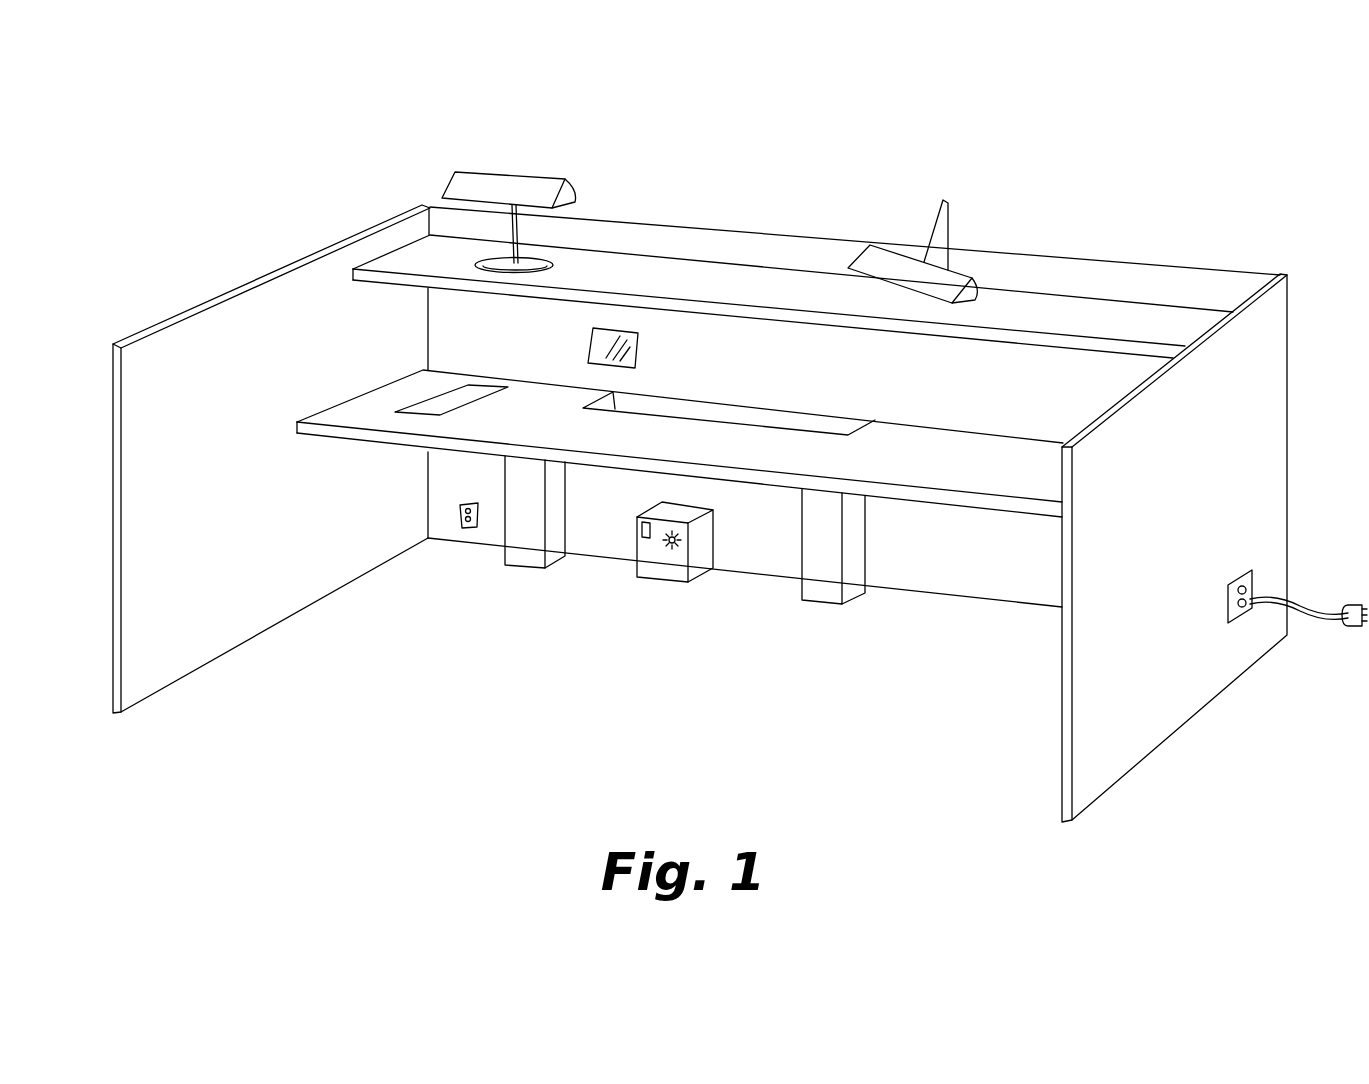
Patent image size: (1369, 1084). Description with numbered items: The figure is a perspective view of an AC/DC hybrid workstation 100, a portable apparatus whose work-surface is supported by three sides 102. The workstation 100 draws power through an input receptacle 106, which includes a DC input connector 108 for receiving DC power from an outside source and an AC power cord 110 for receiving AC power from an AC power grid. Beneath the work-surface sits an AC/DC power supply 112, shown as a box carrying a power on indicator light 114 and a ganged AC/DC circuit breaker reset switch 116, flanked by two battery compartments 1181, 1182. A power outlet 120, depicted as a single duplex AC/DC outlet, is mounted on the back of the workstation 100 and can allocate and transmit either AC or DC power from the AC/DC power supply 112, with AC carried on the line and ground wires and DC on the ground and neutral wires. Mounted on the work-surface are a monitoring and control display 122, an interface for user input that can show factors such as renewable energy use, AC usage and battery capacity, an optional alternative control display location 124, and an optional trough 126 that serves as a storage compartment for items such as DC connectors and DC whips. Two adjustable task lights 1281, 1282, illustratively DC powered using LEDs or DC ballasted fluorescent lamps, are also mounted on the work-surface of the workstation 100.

The AC/DC hybrid workstation 100 is at (266, 176).
The sides 102 is at (113, 402).
The input receptacle 106 is at (1247, 561).
The DC input connector 108 is at (1247, 590).
The AC power cord 110 is at (1334, 619).
The AC/DC power supply 112 is at (648, 569).
The power on indicator light 114 is at (676, 553).
The ganged AC/DC circuit breaker reset switch 116 is at (637, 541).
The battery compartment 1181 is at (522, 557).
The battery compartment 1182 is at (828, 593).
The power outlet 120 is at (468, 529).
The monitoring and control display 122 is at (473, 397).
The alternative control display location 124 is at (355, 410).
The trough 126 is at (852, 428).
The task light 1281 is at (478, 171).
The task light 1282 is at (928, 212).